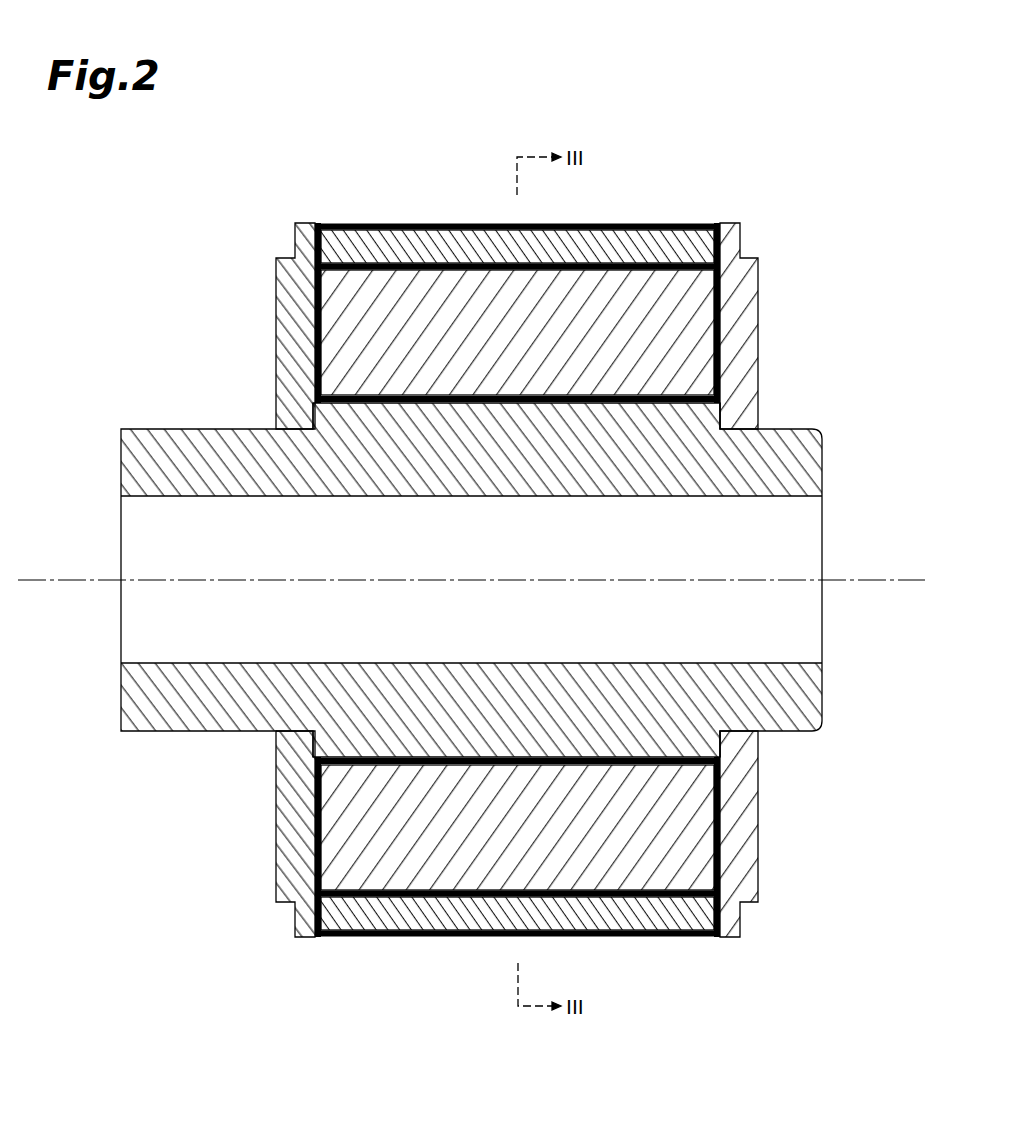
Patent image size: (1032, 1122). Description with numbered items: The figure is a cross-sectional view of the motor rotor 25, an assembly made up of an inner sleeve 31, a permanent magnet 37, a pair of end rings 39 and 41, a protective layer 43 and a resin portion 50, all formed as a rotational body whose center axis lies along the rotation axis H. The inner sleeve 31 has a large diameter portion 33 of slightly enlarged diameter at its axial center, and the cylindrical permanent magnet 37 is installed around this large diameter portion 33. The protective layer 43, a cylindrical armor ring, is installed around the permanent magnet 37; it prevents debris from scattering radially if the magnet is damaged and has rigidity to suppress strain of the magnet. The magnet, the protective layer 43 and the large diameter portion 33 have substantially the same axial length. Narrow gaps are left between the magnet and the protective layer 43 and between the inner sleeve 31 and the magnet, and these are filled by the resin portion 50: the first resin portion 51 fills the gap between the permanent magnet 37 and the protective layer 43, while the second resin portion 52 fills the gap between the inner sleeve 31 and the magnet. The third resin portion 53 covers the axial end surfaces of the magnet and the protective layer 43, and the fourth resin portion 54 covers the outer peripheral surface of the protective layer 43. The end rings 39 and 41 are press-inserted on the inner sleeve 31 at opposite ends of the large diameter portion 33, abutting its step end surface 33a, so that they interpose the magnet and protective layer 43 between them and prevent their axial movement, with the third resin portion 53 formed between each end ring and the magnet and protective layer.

The motor rotor 25 is at (770, 132).
The inner sleeve 31 is at (446, 611).
The large diameter portion 33 is at (488, 740).
The step end surface 33a is at (307, 423).
The permanent magnet 37 is at (640, 285).
The end ring 39 is at (292, 325).
The end ring 41 is at (742, 332).
The protective layer 43 is at (484, 228).
The resin portion 50 is at (549, 514).
The first resin portion 51 is at (592, 265).
The second resin portion 52 is at (530, 403).
The third resin portion 53 is at (313, 305).
The fourth resin portion 54 is at (433, 223).
The rotation axis H is at (48, 578).